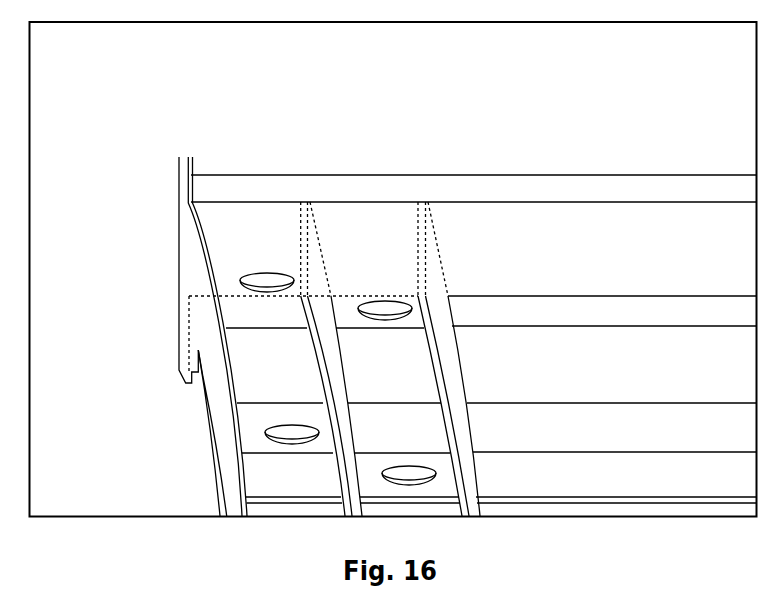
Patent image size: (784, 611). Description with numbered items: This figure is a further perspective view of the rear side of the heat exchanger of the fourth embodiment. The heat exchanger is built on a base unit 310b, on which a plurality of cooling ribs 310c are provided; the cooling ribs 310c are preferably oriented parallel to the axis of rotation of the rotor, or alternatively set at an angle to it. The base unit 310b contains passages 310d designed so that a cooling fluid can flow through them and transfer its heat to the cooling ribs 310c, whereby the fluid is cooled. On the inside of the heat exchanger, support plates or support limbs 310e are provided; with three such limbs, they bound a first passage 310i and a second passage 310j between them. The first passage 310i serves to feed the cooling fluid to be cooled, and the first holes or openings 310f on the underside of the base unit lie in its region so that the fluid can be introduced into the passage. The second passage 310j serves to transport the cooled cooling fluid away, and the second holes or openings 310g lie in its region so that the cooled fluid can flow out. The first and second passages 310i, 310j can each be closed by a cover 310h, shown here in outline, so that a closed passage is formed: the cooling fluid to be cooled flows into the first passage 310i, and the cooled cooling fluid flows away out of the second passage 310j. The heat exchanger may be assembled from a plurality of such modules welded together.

The base unit 310b is at (474, 188).
The cooling ribs 310c is at (393, 269).
The passages 310d is at (172, 336).
The support plates or support limbs 310e is at (455, 373).
The first hole or opening 310f is at (268, 277).
The second hole or opening 310g is at (387, 312).
The cover 310h is at (332, 293).
The first passage 310i is at (292, 478).
The second passage 310j is at (399, 415).